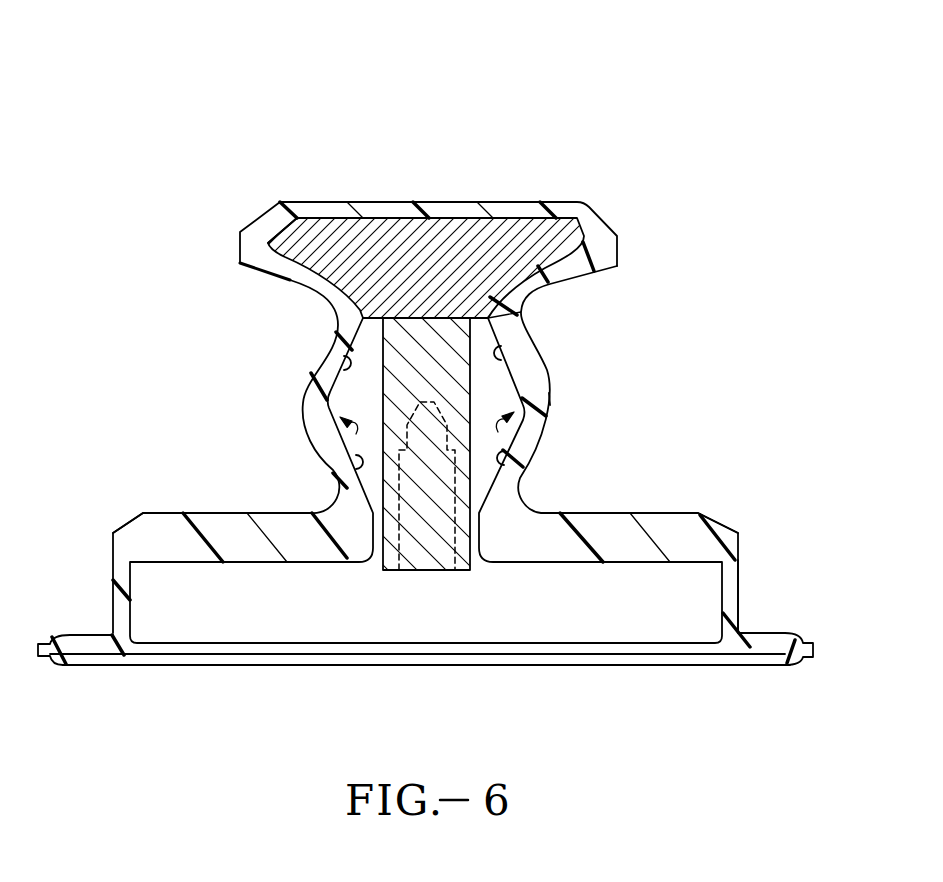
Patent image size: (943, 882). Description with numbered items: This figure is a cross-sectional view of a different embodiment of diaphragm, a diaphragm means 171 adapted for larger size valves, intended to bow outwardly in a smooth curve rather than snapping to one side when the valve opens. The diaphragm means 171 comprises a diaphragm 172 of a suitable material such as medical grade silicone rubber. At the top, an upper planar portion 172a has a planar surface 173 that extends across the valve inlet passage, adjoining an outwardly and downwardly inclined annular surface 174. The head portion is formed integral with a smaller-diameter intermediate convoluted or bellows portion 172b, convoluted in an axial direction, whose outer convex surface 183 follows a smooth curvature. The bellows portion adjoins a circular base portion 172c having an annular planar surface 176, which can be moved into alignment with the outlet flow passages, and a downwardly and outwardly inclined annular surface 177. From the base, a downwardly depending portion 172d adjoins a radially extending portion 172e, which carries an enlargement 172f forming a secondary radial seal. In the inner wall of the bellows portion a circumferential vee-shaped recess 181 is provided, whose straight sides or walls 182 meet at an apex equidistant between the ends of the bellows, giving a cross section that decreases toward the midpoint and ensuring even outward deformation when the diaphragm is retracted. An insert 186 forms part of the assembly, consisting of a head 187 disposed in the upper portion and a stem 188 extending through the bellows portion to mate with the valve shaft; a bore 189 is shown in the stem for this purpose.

The diaphragm means 171 is at (204, 124).
The diaphragm 172 is at (550, 196).
The upper planar portion 172a is at (378, 200).
The intermediate convoluted or bellows portion 172b is at (532, 352).
The circular base portion 172c is at (686, 520).
The downwardly depending portion 172d is at (733, 603).
The radially extending portion 172e is at (766, 657).
The enlargement 172f is at (788, 664).
The planar surface 173 is at (446, 200).
The outwardly and downwardly inclined annular surface 174 is at (604, 210).
The annular planar surface 176 is at (637, 512).
The downwardly and outwardly inclined annular surface 177 is at (727, 525).
The vee-shaped recess 181 is at (333, 449).
The straight sides or walls 182 is at (318, 373).
The outer convex surface 183 is at (550, 397).
The insert 186 is at (370, 402).
The head 187 is at (340, 253).
The stem 188 is at (425, 347).
The hidden bore 189 is at (423, 572).